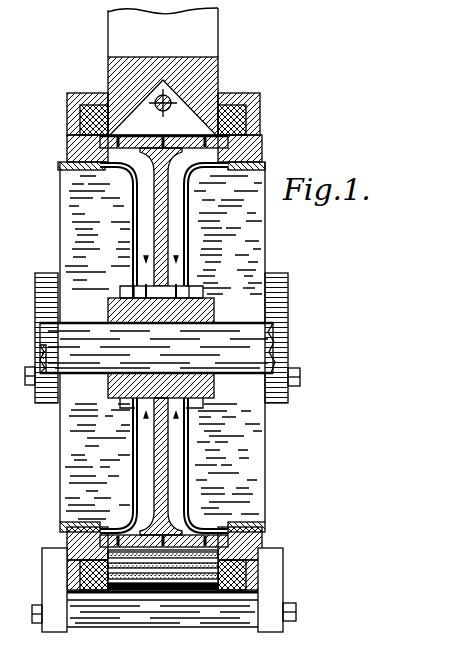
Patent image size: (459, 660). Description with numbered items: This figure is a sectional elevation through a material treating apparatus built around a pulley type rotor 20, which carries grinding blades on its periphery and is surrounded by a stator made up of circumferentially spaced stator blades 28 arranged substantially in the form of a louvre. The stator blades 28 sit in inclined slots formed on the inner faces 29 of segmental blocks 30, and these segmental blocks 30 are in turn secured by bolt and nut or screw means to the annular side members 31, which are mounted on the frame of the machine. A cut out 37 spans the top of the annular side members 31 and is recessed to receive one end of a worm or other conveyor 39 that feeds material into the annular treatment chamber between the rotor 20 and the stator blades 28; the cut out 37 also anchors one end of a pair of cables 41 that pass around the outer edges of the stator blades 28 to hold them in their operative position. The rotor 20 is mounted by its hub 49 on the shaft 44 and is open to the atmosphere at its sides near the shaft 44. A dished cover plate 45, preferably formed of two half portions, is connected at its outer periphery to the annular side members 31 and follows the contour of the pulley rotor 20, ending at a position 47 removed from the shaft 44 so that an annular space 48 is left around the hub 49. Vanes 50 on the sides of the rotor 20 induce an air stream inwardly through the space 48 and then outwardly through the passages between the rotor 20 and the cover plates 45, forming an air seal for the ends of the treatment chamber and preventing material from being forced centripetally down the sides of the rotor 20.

The rotor 20 is at (154, 256).
The stator blades 28 is at (104, 550).
The inner faces of segmental blocks 29 is at (238, 584).
The segmental blocks 30 is at (67, 125).
The annular side members 31 is at (67, 147).
The cut out 37 is at (218, 76).
The conveyor 39 is at (168, 108).
The cables 41 is at (64, 567).
The shaft 44 is at (255, 342).
The cover plate 45 is at (193, 264).
The inner edge position of cover plate 47 is at (196, 277).
The annular space 48 is at (186, 292).
The hub 49 is at (200, 318).
The vanes 50 is at (123, 176).